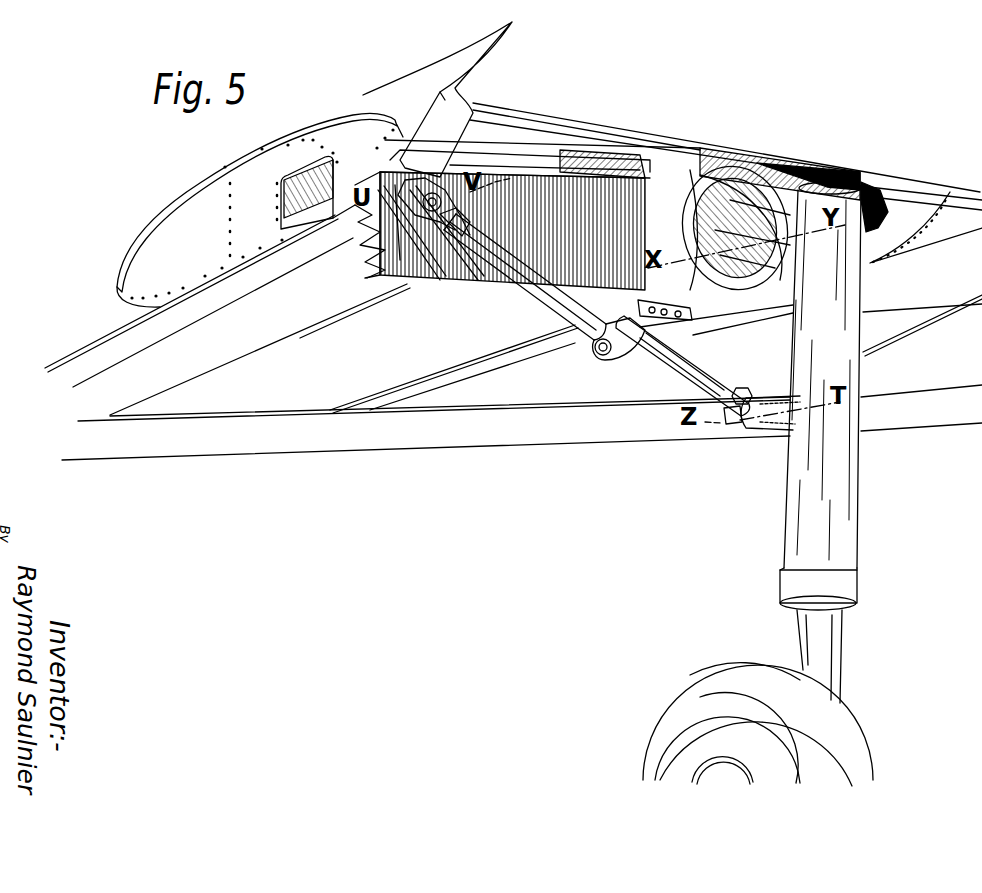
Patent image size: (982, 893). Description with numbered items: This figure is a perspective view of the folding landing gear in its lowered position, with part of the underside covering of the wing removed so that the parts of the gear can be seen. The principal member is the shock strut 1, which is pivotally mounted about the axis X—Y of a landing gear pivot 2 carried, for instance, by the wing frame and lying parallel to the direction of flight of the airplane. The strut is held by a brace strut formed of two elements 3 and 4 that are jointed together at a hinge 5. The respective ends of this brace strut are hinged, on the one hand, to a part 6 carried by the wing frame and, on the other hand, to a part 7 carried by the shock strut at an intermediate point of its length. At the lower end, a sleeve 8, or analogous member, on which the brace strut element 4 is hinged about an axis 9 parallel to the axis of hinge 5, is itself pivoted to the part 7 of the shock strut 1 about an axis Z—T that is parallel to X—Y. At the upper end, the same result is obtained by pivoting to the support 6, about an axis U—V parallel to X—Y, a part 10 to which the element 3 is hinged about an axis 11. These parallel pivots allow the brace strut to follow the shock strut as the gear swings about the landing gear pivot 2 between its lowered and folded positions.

The shock strut 1 is at (830, 486).
The landing gear pivot 2 is at (745, 225).
The brace strut element 3 is at (530, 291).
The brace strut element 4 is at (660, 355).
The hinge 5 is at (597, 354).
The part carried by the wing frame 6 is at (415, 165).
The part carried by the shock strut 7 is at (776, 430).
The sleeve 8 is at (735, 430).
The axis 9 is at (748, 395).
The part 10 is at (376, 228).
The axis 11 is at (445, 208).